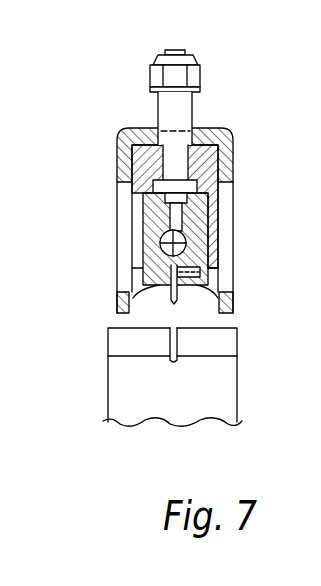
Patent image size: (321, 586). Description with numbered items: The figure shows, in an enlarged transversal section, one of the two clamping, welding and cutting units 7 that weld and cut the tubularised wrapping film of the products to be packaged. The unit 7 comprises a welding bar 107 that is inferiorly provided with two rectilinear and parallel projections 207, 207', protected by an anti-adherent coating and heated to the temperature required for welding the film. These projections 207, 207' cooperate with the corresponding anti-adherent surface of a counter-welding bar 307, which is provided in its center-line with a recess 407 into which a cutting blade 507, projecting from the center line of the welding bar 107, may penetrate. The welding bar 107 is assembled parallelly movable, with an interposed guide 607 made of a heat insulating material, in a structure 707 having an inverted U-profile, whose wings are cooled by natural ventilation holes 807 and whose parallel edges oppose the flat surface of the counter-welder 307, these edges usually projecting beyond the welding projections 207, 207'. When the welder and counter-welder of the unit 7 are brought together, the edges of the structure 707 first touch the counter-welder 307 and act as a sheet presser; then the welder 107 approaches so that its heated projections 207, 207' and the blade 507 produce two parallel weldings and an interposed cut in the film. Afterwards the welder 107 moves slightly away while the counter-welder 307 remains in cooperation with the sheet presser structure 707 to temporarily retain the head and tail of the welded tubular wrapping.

The clamping, welding and cutting unit 7 is at (212, 128).
The welding bar 107 is at (153, 218).
The rectilinear projection 207 is at (90, 279).
The rectilinear projection 207' is at (263, 294).
The counter-welding bar 307 is at (225, 373).
The recess 407 is at (172, 362).
The cutting blade 507 is at (173, 299).
The guide 607 is at (210, 163).
The structure 707 is at (120, 143).
The natural ventilation hole 807 is at (120, 229).